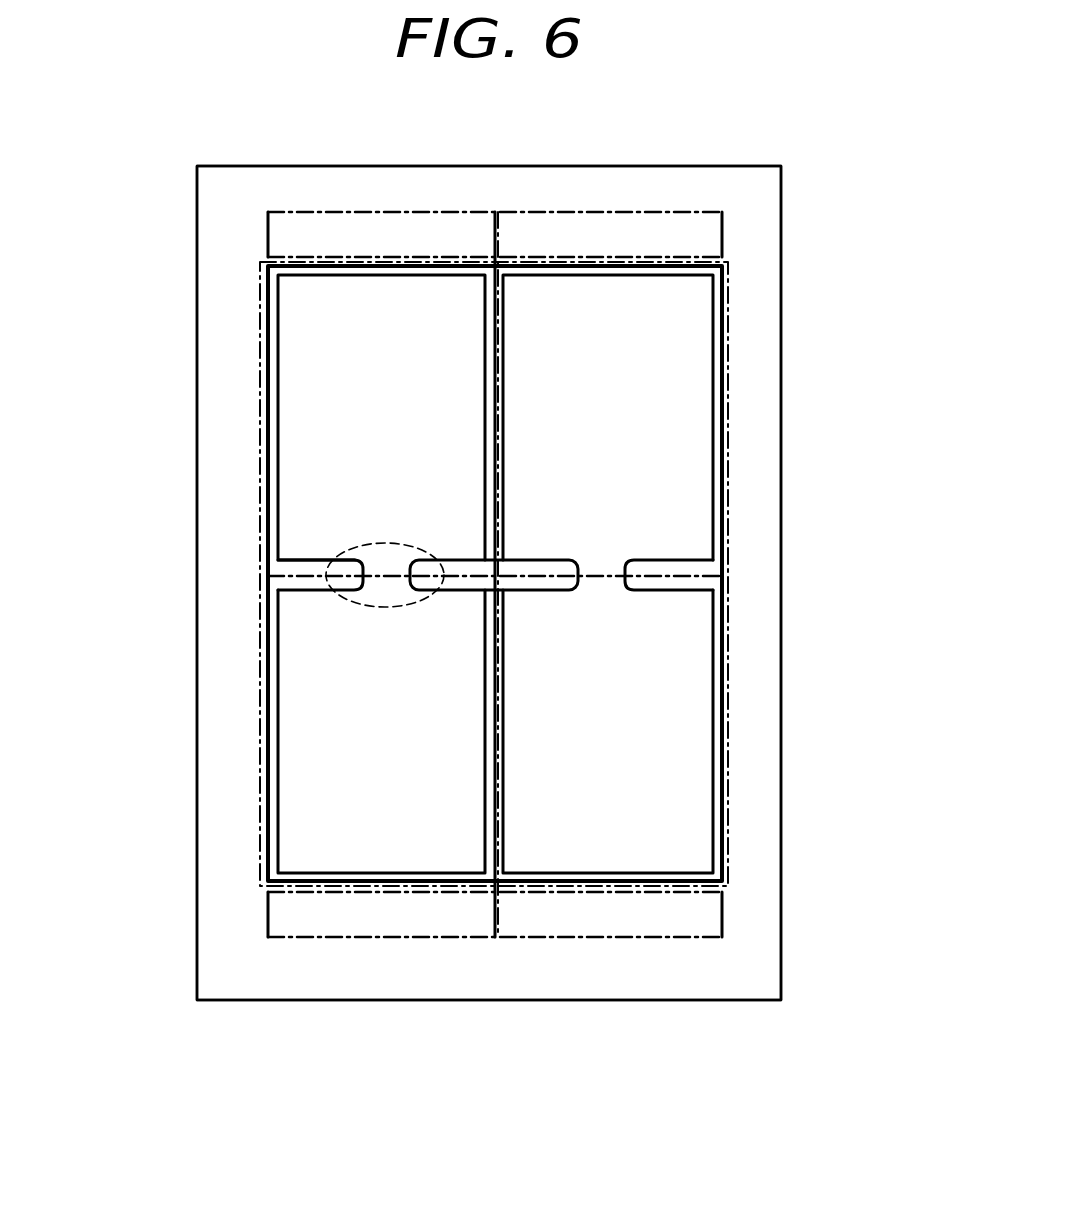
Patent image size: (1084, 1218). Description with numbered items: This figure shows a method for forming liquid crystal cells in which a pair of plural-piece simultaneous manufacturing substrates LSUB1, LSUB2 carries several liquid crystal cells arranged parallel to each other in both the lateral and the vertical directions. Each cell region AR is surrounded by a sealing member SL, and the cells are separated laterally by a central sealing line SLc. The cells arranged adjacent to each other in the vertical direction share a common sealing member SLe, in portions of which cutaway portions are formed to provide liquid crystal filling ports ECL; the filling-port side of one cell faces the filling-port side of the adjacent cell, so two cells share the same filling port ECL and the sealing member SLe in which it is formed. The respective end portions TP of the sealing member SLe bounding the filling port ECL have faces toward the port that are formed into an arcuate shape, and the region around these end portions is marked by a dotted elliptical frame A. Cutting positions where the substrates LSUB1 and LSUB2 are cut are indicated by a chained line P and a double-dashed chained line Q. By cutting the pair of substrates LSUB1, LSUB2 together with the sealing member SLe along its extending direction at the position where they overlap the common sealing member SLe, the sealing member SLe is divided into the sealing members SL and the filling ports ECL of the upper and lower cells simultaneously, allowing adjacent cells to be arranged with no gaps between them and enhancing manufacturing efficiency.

The sealing member SL is at (260, 383).
The central seal line SLc is at (502, 373).
The common sealing member SLe is at (303, 568).
The liquid crystal filling port ECL is at (378, 583).
The end portion TP is at (407, 570).
The elliptical frame A is at (385, 558).
The active region AR is at (495, 574).
The double-dashed chained line Q is at (417, 892).
The chained line P is at (665, 938).
The plural-piece simultaneous manufacturing substrate LSUB1 is at (265, 1002).
The plural-piece simultaneous manufacturing substrate LSUB2 is at (489, 679).